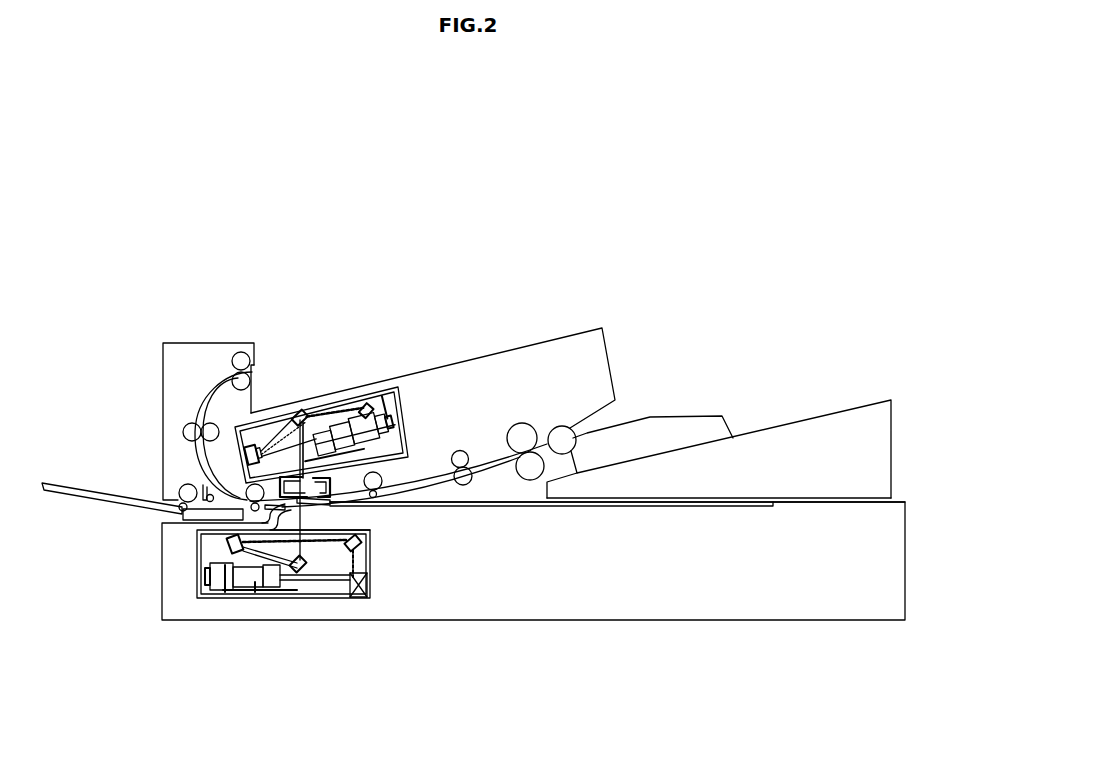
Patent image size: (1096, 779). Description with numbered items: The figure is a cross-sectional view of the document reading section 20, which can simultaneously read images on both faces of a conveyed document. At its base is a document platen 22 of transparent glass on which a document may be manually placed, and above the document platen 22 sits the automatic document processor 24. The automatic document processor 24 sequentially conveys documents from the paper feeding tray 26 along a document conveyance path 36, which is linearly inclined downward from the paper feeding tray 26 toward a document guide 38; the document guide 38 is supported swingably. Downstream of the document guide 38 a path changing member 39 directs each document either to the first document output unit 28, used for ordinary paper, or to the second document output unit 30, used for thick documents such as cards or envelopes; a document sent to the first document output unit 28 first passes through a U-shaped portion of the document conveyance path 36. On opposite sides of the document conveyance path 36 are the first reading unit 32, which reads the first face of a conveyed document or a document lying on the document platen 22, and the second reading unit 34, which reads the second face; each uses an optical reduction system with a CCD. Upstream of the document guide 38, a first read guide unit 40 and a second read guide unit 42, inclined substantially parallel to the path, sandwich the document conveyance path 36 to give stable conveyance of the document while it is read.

The document reading section 20 is at (727, 316).
The document platen 22 is at (660, 502).
The automatic document processor 24 is at (212, 318).
The paper feeding tray 26 is at (743, 408).
The first document output unit 28 is at (405, 356).
The second document output unit 30 is at (114, 494).
The first reading unit 32 is at (402, 577).
The second reading unit 34 is at (281, 412).
The document conveyance path 36 is at (445, 466).
The document guide 38 is at (267, 535).
The path changing member 39 is at (280, 495).
The first read guide unit 40 is at (332, 506).
The second read guide unit 42 is at (301, 473).